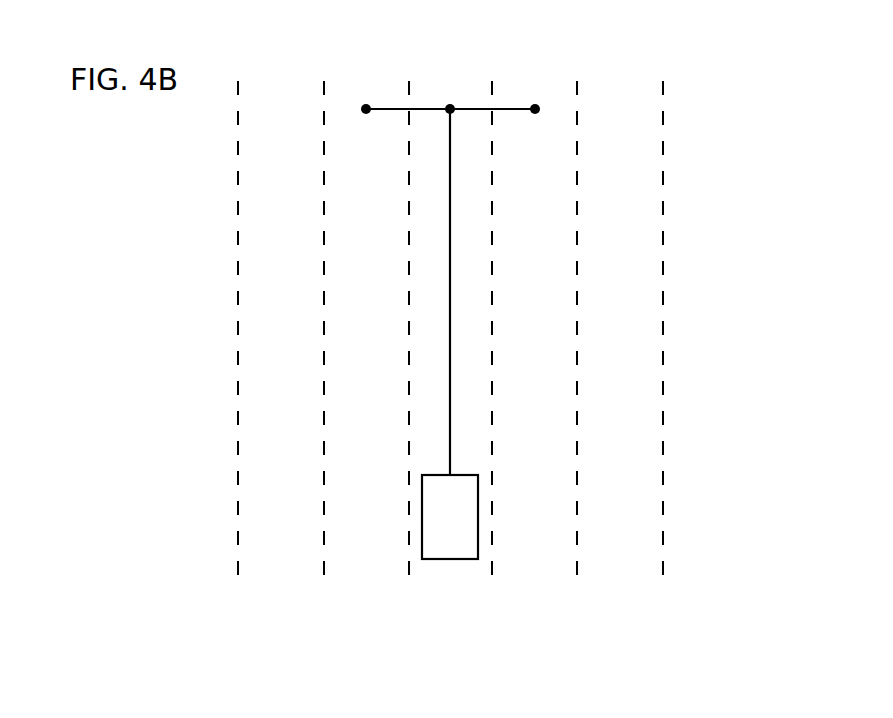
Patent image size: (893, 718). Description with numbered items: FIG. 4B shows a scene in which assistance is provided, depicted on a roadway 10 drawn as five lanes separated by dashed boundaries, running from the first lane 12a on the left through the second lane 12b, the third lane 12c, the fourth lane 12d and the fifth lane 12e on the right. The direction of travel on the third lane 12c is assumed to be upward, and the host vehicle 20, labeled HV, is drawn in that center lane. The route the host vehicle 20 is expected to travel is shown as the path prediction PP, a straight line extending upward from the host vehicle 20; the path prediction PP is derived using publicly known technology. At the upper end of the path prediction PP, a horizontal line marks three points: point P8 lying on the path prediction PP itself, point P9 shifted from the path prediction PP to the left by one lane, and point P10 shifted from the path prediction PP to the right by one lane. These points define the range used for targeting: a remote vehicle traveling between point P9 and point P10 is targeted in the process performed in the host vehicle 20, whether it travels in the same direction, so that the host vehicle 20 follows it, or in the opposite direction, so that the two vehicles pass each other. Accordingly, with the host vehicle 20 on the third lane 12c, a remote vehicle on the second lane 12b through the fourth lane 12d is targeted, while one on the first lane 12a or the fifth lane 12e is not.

The substrate / pixel region 10 is at (663, 512).
The first lane 12a is at (282, 570).
The second lane 12b is at (378, 570).
The third lane 12c is at (452, 570).
The fourth lane 12d is at (548, 570).
The fifth lane 12e is at (617, 570).
The host vehicle 20 is at (478, 500).
The path prediction PP is at (452, 320).
The point P8 is at (450, 104).
The point P9 is at (366, 104).
The point P10 is at (535, 104).